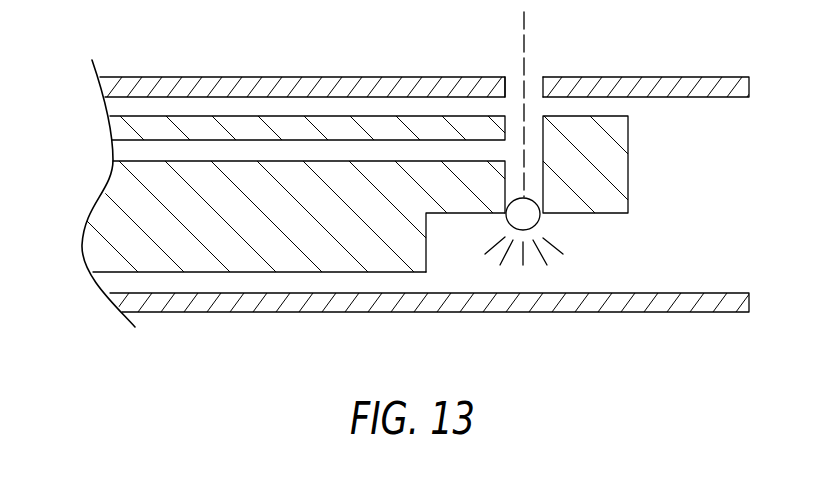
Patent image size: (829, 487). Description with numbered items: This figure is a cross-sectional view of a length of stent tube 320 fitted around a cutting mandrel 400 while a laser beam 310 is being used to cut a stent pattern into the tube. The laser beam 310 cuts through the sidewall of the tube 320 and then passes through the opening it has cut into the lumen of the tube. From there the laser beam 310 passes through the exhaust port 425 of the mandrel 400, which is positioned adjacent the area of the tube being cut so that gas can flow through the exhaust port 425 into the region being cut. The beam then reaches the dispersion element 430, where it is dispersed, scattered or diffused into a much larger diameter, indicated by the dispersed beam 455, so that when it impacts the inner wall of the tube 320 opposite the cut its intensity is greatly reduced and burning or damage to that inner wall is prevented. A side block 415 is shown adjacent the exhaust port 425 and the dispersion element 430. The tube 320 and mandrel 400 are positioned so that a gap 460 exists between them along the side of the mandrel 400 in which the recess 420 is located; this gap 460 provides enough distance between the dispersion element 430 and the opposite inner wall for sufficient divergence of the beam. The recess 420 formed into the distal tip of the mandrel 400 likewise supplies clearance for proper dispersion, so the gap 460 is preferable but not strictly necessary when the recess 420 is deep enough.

The laser beam 310 is at (524, 52).
The stent tube 320 is at (245, 77).
The mandrel 400 is at (122, 180).
The side block 415 is at (627, 163).
The recess 420 is at (458, 213).
The exhaust port 425 is at (532, 113).
The dispersion element 430 is at (540, 214).
The dispersed laser beam 455 is at (523, 255).
The gap 460 is at (277, 280).